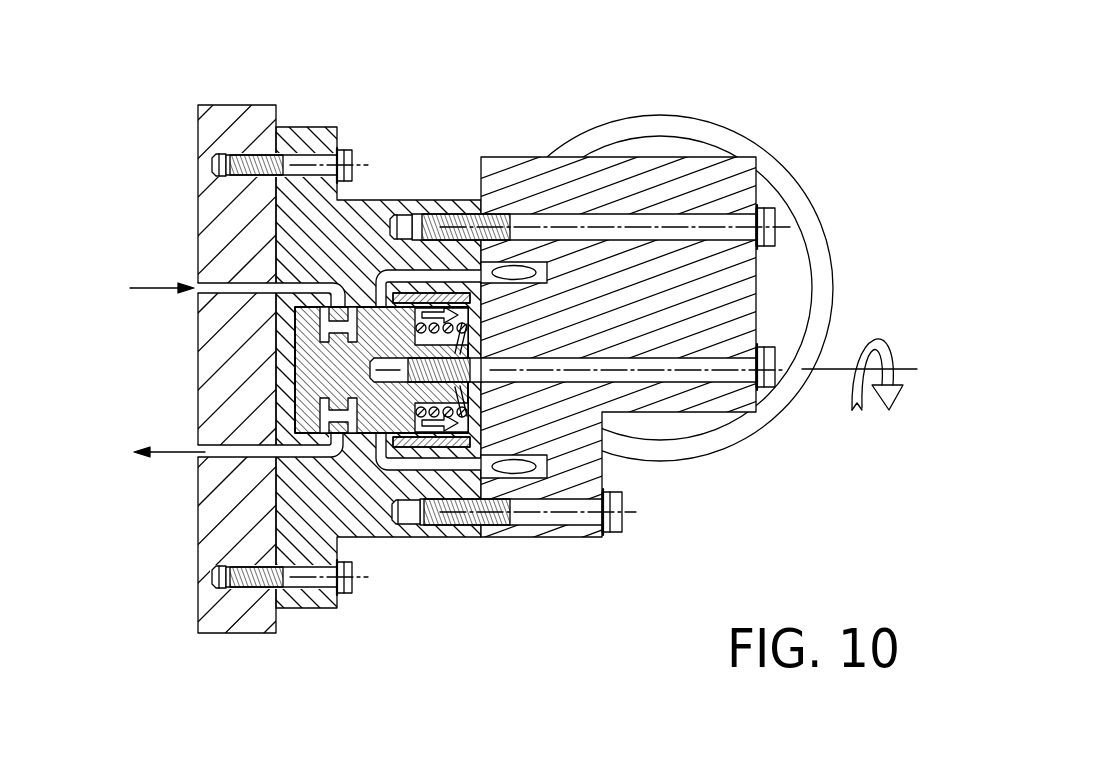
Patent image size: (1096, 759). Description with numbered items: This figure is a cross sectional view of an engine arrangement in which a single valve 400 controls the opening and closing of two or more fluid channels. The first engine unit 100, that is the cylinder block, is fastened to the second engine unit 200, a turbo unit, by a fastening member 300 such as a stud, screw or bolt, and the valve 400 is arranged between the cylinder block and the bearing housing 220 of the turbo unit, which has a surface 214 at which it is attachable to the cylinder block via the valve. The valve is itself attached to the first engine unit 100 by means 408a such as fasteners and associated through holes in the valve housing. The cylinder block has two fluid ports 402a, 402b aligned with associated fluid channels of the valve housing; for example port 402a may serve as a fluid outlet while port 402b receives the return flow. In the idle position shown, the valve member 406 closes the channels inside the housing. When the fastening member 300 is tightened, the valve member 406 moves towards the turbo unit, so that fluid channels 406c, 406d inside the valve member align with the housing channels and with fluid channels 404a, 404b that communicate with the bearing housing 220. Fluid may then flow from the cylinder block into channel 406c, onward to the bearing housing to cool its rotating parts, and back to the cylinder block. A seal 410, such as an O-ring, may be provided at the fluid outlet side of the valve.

The first engine unit 100 is at (199, 128).
The second engine unit 200 is at (805, 95).
The surface 214 is at (483, 156).
The bearing housing 220 is at (679, 189).
The fastening member 300 is at (720, 375).
The valve 400 is at (412, 537).
The fluid port 402a is at (201, 288).
The fluid port 402b is at (204, 452).
The fluid channel 404a is at (399, 268).
The fluid channel 404b is at (452, 470).
The valve member 406 is at (342, 371).
The fluid channel 406c is at (352, 334).
The fluid channel 406d is at (345, 406).
The means for attaching the valve 408a is at (366, 163).
The seal 410 is at (490, 386).